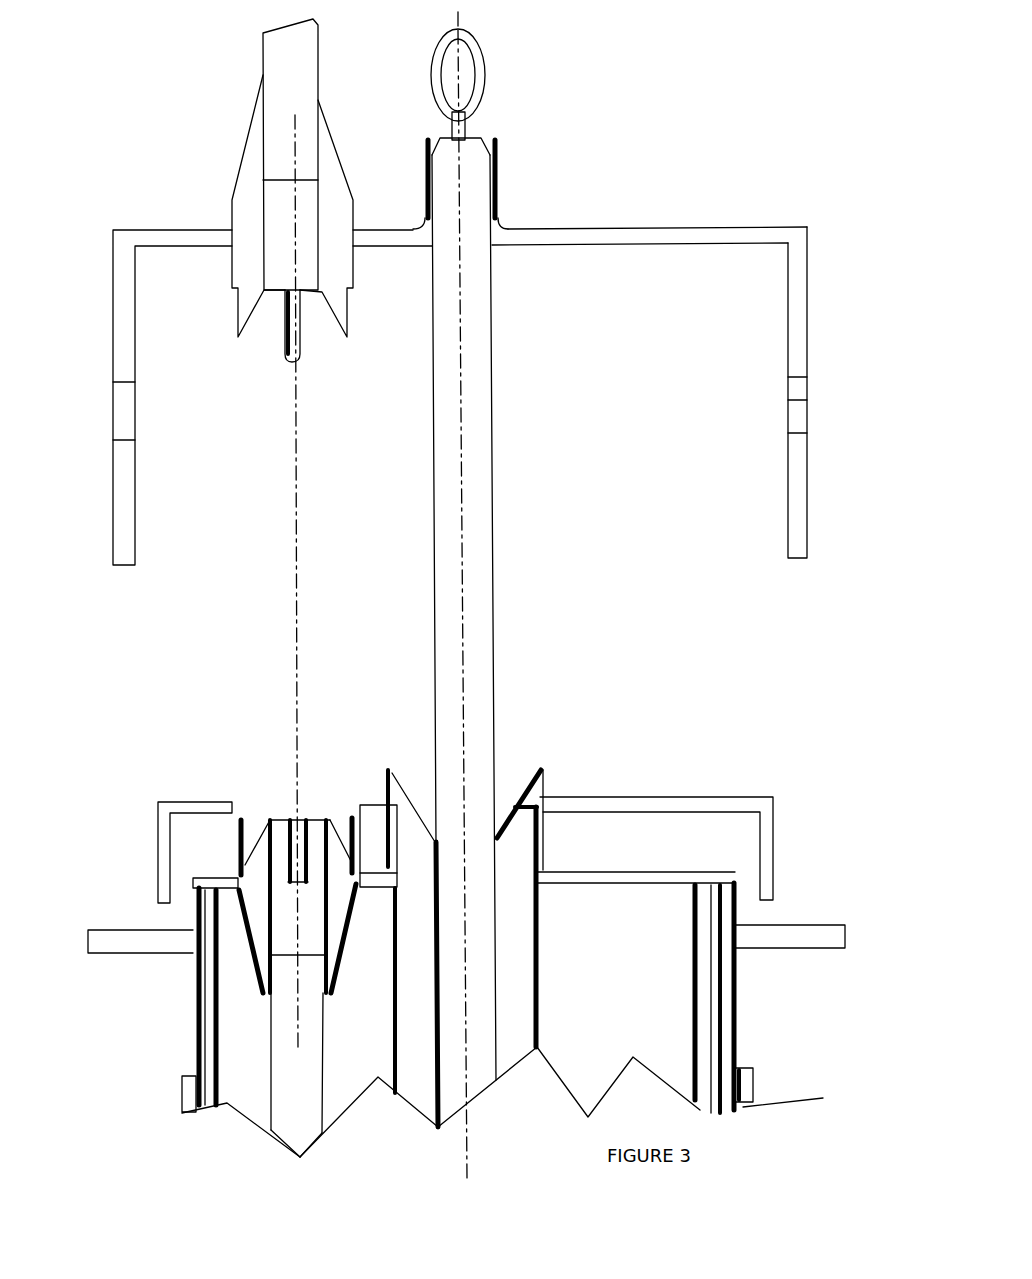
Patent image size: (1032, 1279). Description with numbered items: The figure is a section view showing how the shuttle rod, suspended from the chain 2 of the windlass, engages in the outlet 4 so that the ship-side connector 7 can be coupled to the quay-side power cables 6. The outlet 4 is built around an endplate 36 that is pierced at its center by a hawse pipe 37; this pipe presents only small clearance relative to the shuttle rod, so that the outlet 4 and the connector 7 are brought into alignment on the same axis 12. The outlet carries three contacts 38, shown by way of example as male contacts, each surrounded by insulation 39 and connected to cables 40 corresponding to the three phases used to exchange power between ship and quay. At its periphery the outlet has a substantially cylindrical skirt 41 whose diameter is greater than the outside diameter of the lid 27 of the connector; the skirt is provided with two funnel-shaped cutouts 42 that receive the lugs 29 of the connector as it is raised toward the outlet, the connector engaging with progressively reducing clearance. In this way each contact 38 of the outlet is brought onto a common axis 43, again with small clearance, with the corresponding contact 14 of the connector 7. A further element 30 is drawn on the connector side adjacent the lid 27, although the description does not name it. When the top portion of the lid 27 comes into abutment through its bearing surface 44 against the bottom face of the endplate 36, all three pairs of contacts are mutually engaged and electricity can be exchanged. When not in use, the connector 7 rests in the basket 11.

The chain 2 is at (504, 76).
The outlet 4 is at (493, 364).
The power cables 6 is at (227, 154).
The connector 7 is at (216, 979).
The basket 11 is at (187, 1097).
The axis 12 is at (507, 604).
The contacts of the connector 14 is at (270, 955).
The lid 27 is at (656, 824).
The lugs 29 is at (790, 971).
The sleeve 30 is at (616, 867).
The endplate 36 is at (657, 196).
The hawse pipe 37 is at (493, 184).
The contacts 38 is at (256, 352).
The insulation 39 is at (250, 206).
The cables 40 is at (777, 1071).
The skirt 41 is at (733, 313).
The funnel-shaped cutouts 42 is at (747, 473).
The common axis 43 is at (254, 582).
The bearing surface 44 is at (376, 899).